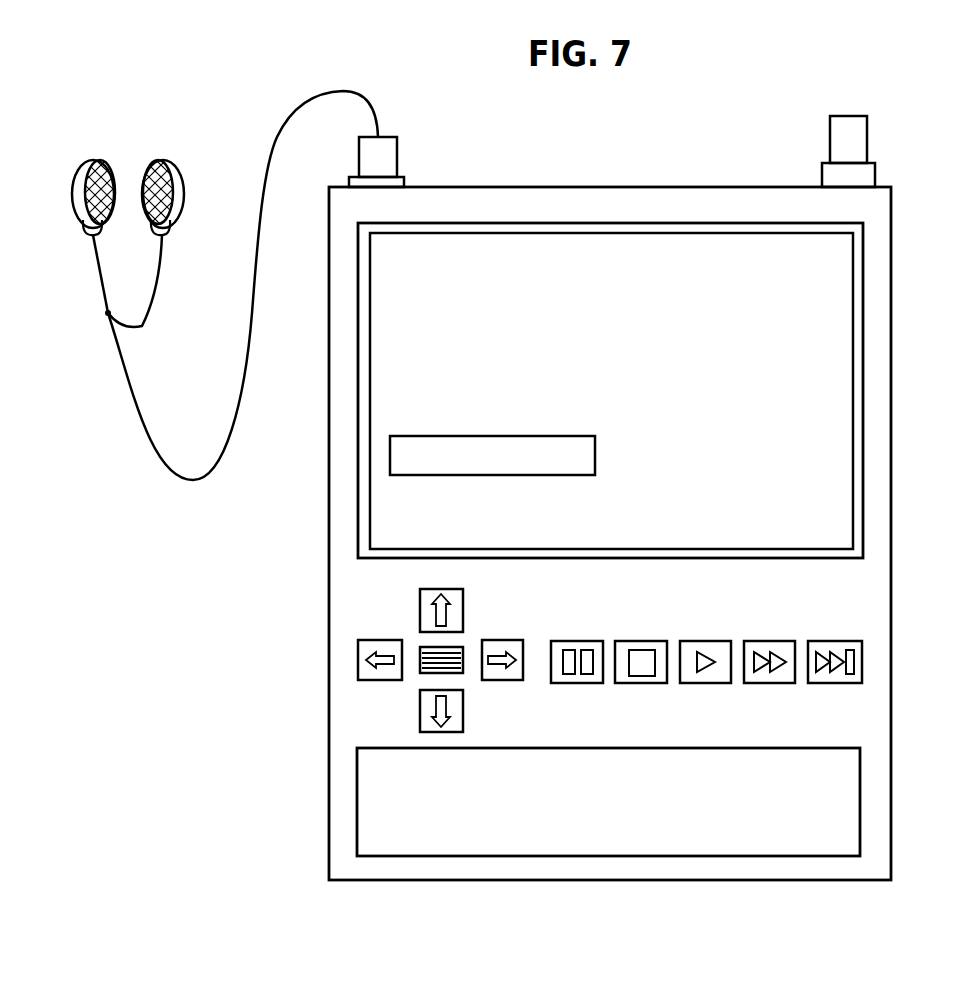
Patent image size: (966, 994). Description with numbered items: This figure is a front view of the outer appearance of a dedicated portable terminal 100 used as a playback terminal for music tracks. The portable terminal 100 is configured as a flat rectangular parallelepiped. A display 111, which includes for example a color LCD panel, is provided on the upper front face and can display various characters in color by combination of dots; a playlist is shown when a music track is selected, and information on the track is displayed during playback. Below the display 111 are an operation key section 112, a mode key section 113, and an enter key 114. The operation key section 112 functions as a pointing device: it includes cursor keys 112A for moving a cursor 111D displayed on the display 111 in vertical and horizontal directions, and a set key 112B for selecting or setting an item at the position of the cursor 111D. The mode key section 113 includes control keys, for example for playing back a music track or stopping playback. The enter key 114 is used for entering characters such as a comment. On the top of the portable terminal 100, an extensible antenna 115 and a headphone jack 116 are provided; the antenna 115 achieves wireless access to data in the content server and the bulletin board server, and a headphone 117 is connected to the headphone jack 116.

The portable terminal 100 is at (158, 664).
The display 111 is at (842, 491).
The cursor 111D is at (493, 477).
The operation key section 112 is at (449, 652).
The cursor keys 112A is at (513, 641).
The set key 112B is at (420, 666).
The mode key section 113 is at (642, 683).
The enter key 114 is at (559, 857).
The extensible antenna 115 is at (848, 115).
The headphone jack 116 is at (385, 135).
The headphone 117 is at (145, 152).